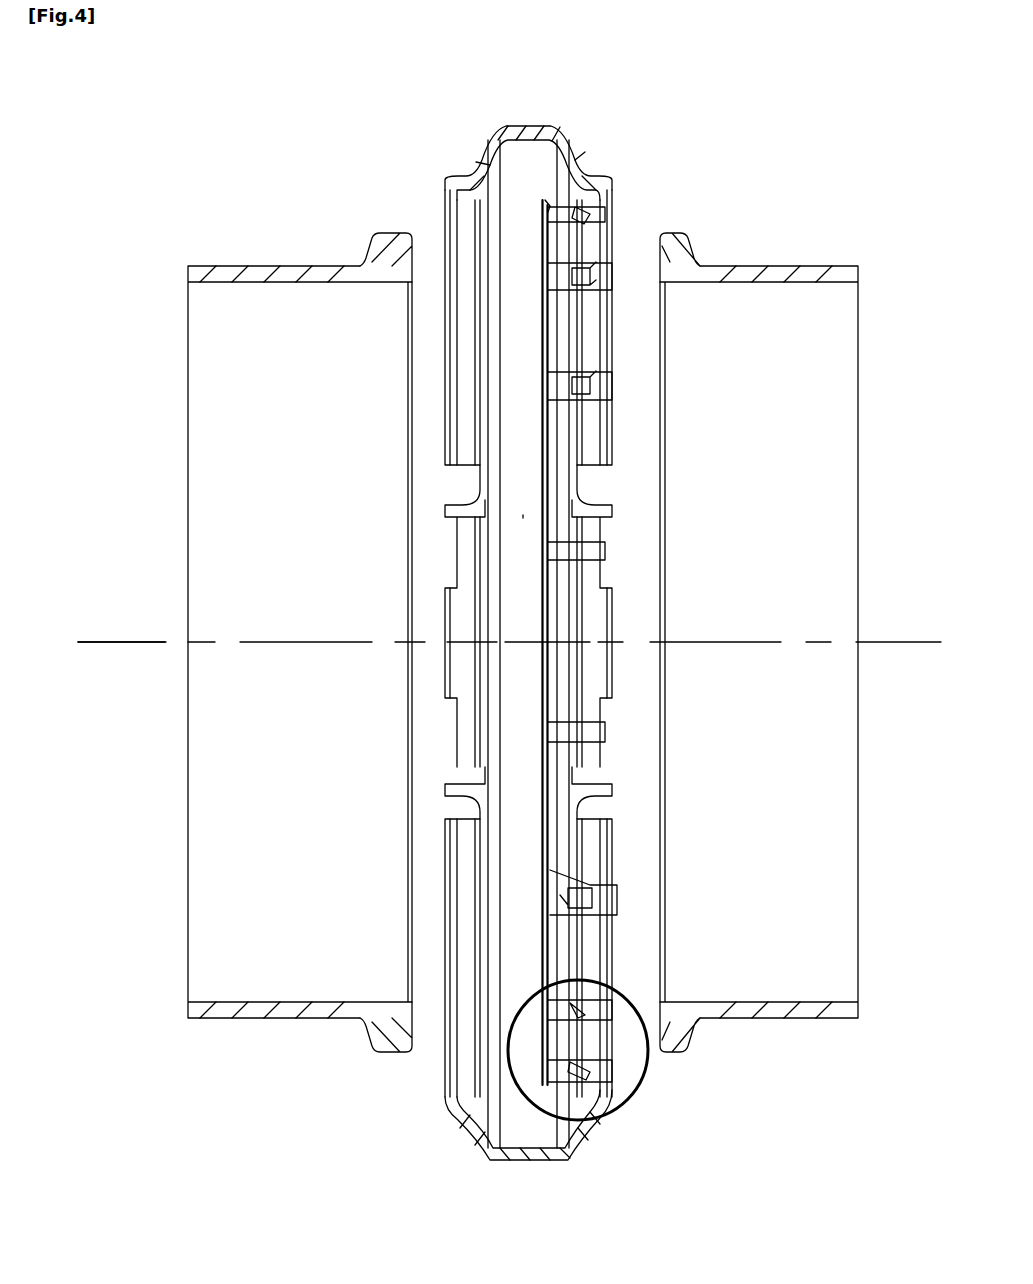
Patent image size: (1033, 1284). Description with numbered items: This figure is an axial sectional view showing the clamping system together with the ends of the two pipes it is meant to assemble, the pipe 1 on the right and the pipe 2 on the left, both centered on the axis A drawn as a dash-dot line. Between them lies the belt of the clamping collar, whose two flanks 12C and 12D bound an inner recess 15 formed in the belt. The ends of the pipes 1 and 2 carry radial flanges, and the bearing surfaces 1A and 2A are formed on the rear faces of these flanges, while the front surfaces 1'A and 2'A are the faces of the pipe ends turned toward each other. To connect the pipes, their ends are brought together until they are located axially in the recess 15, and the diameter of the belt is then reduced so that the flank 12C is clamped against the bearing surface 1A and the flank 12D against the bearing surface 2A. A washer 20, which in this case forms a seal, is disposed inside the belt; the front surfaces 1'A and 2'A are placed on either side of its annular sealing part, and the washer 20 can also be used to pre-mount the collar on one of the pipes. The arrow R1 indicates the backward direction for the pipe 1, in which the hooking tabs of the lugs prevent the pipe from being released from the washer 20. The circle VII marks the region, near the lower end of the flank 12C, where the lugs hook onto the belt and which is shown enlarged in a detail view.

The pipe 1 is at (759, 603).
The bearing surface 1A is at (693, 243).
The front surface 1'A is at (670, 593).
The pipe 2 is at (300, 604).
The bearing surface 2A is at (368, 242).
The front surface 2'A is at (396, 591).
The flank 12C is at (612, 430).
The flank 12D is at (445, 325).
The inner recess 15 is at (523, 515).
The washer 20 is at (500, 860).
The axis A is at (103, 642).
The arrow R1 is at (925, 112).
The detail view circle VII is at (626, 1097).